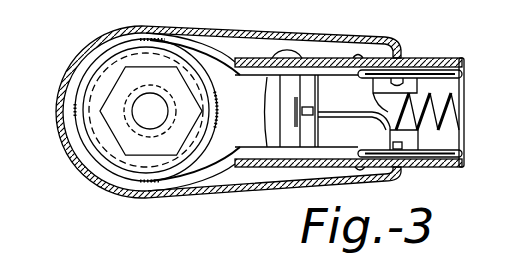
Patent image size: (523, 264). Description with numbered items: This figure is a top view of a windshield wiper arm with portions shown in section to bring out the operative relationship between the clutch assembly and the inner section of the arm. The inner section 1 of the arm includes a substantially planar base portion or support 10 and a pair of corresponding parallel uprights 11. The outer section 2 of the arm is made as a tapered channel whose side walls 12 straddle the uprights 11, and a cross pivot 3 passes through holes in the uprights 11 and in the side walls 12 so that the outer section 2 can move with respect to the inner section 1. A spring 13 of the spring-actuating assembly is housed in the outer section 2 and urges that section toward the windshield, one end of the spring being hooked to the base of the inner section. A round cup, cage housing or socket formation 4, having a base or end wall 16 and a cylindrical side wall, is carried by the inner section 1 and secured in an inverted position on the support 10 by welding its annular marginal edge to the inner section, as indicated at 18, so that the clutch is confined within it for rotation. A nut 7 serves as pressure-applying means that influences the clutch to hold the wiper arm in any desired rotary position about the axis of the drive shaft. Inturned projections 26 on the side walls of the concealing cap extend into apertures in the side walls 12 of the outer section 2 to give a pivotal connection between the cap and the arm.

The inner section of the windshield wiper arm 1 is at (252, 100).
The outer section of the arm 2 is at (466, 81).
The cross pivot 3 is at (289, 50).
The cup, cage housing or socket formation 4 is at (94, 70).
The nut 7 is at (117, 120).
The base portion or support 10 is at (252, 112).
The uprights 11 is at (268, 79).
The side walls 12 is at (451, 60).
The spring 13 is at (334, 110).
The base or end wall 16 is at (107, 143).
The weld 18 is at (156, 37).
The inturned projections 26 is at (403, 80).